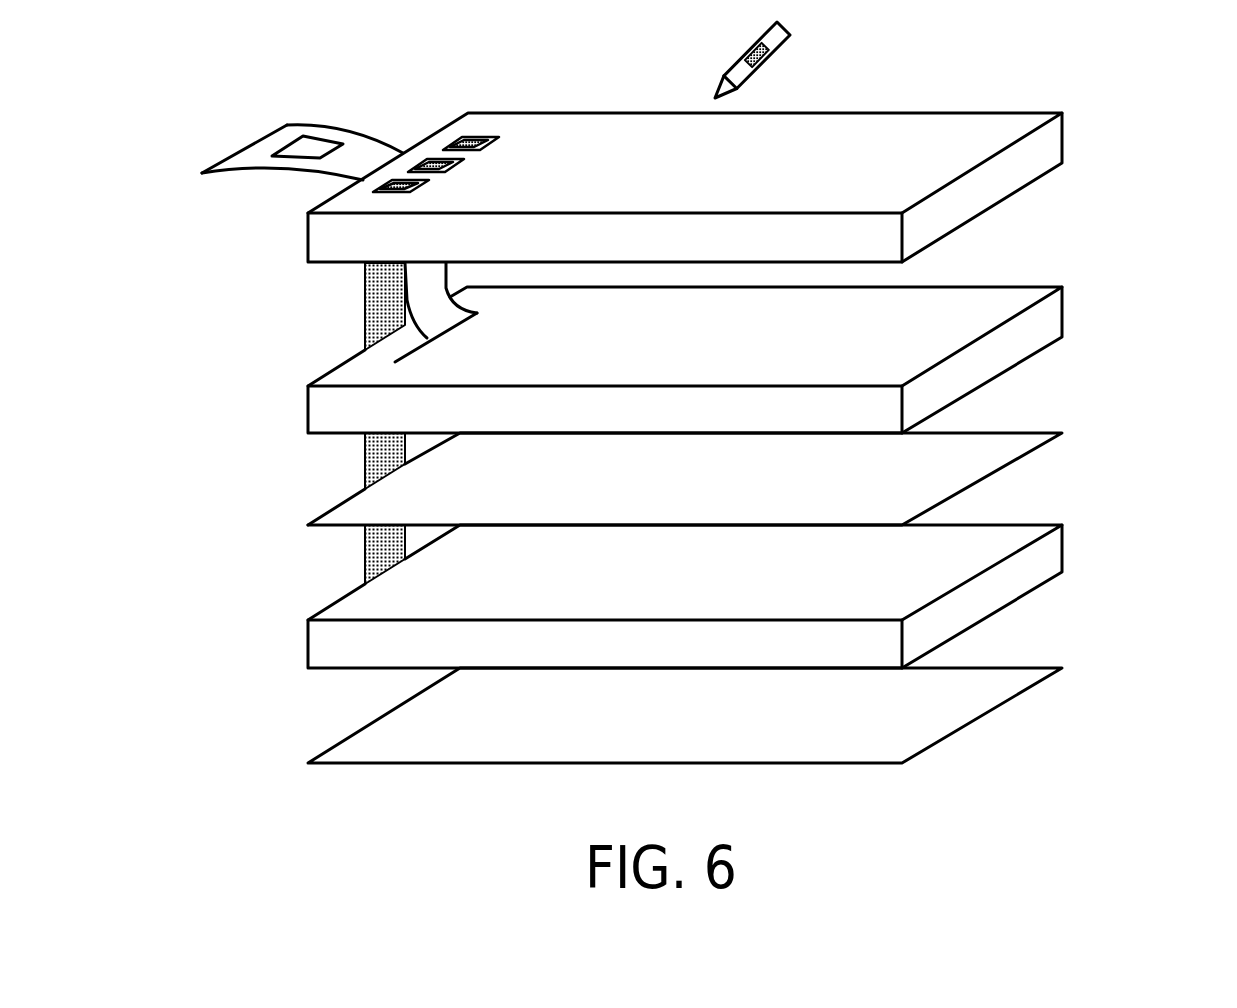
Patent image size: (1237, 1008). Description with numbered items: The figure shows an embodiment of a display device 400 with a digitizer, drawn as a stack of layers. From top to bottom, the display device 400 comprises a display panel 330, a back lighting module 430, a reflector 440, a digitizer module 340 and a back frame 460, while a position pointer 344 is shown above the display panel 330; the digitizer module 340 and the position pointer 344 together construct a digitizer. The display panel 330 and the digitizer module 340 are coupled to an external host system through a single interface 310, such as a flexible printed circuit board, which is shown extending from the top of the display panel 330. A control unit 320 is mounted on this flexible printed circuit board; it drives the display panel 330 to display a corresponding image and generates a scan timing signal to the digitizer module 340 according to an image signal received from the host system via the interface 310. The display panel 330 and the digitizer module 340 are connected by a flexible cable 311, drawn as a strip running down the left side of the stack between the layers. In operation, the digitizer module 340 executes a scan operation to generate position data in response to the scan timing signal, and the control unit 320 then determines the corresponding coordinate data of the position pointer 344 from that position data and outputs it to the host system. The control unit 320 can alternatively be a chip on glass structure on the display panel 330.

The interface 310 is at (237, 158).
The flexible cable 311 is at (363, 287).
The control unit 320 is at (302, 140).
The display panel 330 is at (997, 132).
The position pointer 344 is at (767, 63).
The back lighting module 430 is at (997, 303).
The reflector 440 is at (997, 445).
The digitizer module 340 is at (997, 540).
The back frame 460 is at (997, 683).
The display device 400 is at (1200, 730).